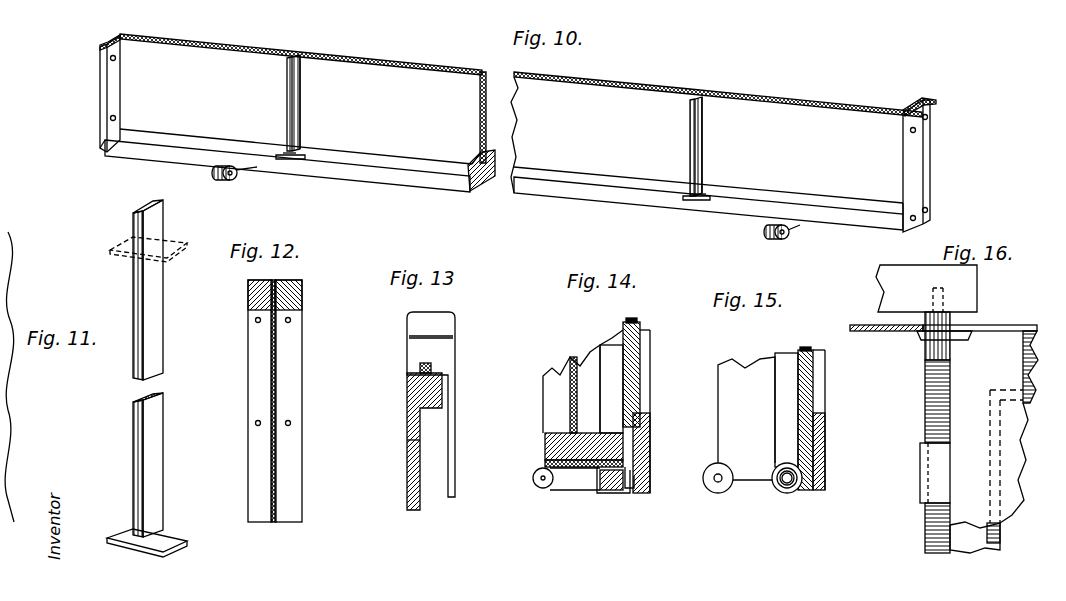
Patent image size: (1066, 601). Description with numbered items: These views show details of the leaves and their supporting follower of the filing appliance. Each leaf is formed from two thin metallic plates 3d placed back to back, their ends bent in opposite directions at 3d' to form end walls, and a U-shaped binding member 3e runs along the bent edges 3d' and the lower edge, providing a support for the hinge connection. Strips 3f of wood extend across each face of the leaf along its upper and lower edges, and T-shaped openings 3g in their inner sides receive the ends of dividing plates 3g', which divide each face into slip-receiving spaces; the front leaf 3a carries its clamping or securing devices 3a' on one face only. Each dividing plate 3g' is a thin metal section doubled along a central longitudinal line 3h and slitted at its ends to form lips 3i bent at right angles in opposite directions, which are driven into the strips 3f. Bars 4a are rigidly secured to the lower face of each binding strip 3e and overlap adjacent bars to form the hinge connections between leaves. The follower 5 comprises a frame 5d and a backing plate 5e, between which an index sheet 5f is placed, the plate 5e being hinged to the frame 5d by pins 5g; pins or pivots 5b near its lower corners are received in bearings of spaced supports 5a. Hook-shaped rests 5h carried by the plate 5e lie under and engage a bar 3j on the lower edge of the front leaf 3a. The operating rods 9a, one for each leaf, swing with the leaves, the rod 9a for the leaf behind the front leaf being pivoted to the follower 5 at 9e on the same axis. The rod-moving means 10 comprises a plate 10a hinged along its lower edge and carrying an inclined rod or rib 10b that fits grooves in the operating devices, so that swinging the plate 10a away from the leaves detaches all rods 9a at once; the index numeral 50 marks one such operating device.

In FIG. 12, the front leaf 3a is at (301, 401).
In FIG. 14, the front leaf 3a is at (639, 389).
In FIG. 12, the clamping or securing devices 3a' is at (275, 416).
In FIG. 10, the metallic plate 3d is at (521, 118).
In FIG. 14, the metallic plate 3d is at (583, 381).
In FIG. 10, the bent over end of plate 3d' is at (493, 66).
In FIG. 10, the binding member 3e is at (98, 123).
In FIG. 14, the binding member 3e is at (543, 464).
In FIG. 10, the strip 3f is at (377, 173).
In FIG. 12, the strip 3f is at (300, 294).
In FIG. 14, the strip 3f is at (547, 448).
In FIG. 10, the T-shape opening 3g is at (493, 196).
In FIG. 10, the dividing plate 3g' is at (512, 124).
In FIG. 10, the central longitudinal line of fold 3h is at (287, 107).
In FIG. 11, the central longitudinal line of fold 3h is at (133, 374).
In FIG. 10, the lip 3i is at (281, 160).
In FIG. 11, the lip 3i is at (180, 250).
In FIG. 14, the bar 3j is at (634, 491).
In FIG. 10, the bar 4a is at (214, 175).
In FIG. 14, the bar 4a is at (557, 491).
In FIG. 14, the follower 5 is at (650, 431).
In FIG. 15, the follower 5 is at (825, 428).
In FIG. 16, the follower 5 is at (980, 412).
In FIG. 16, the support 5a is at (977, 288).
In FIG. 16, the pin or pivot 5b is at (930, 290).
In FIG. 14, the frame 5d is at (647, 454).
In FIG. 15, the frame 5d is at (825, 453).
In FIG. 16, the frame 5d is at (1000, 534).
In FIG. 14, the backing plate 5e is at (631, 323).
In FIG. 15, the backing plate 5e is at (805, 348).
In FIG. 16, the backing plate 5e is at (1000, 528).
In FIG. 14, the index sheet 5f is at (637, 361).
In FIG. 15, the index sheet 5f is at (817, 391).
In FIG. 15, the pin 5g is at (787, 493).
In FIG. 16, the pin 5g is at (933, 368).
In FIG. 14, the rest 5h is at (610, 494).
In FIG. 16, the rest 5h is at (930, 484).
In FIG. 13, the rod 9a is at (455, 337).
In FIG. 15, the rod 9a is at (739, 416).
In FIG. 16, the rod 9a is at (887, 332).
In FIG. 15, the pivot of rod on follower 9e is at (780, 470).
In FIG. 16, the pivot of rod on follower 9e is at (923, 341).
In FIG. 13, the rod-moving means 10 is at (404, 441).
In FIG. 13, the plate 10a is at (407, 478).
In FIG. 13, the rod or rib 10b is at (433, 368).
In FIG. 13, the number plate 50 is at (428, 325).